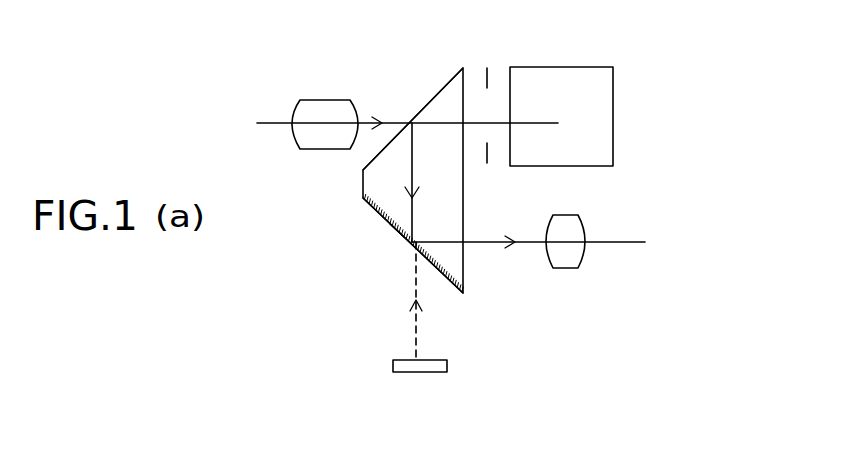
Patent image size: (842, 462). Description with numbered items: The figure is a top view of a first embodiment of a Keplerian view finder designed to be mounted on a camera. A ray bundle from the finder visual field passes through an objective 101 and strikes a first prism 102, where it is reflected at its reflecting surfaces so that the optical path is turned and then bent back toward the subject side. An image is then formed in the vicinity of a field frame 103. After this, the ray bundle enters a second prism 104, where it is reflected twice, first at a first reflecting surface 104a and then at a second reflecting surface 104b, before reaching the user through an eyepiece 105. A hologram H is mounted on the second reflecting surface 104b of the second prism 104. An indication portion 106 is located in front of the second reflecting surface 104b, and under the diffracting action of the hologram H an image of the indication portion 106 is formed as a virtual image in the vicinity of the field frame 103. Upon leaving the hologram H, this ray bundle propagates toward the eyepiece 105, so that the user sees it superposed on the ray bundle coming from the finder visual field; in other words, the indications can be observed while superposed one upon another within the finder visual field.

The objective 101 is at (318, 99).
The first prism 102 is at (633, 87).
The field frame 103 is at (485, 70).
The second prism 104 is at (357, 164).
The first reflecting surface 104a is at (418, 115).
The second reflecting surface 104b is at (368, 207).
The hologram H is at (397, 233).
The eyepiece 105 is at (570, 268).
The indication portion 106 is at (417, 372).